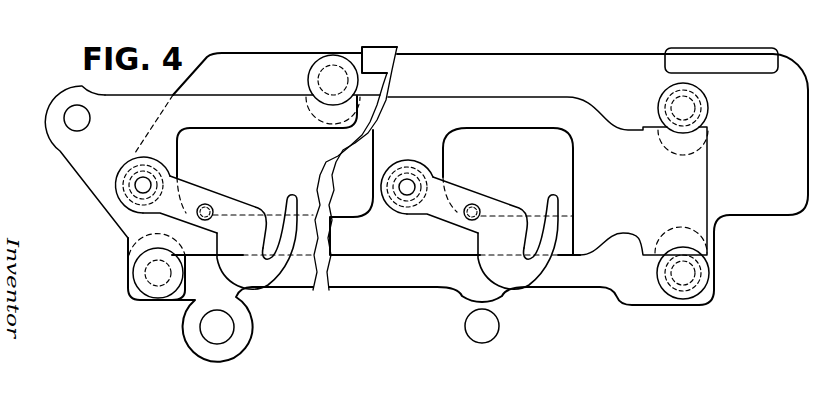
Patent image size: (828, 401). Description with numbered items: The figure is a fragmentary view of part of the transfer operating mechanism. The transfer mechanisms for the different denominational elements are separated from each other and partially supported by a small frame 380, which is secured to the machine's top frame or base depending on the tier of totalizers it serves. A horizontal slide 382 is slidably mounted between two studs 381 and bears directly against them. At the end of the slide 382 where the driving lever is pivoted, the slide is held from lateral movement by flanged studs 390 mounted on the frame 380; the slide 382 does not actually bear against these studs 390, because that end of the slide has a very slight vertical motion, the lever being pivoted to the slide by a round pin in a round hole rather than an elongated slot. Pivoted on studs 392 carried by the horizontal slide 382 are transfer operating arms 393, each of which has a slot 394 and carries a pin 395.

The small frame 380 is at (733, 212).
The stud 381 is at (708, 110).
The horizontal slide 382 is at (703, 176).
The flanged stud 390 is at (309, 78).
The stud 392 is at (139, 182).
The transfer operating arm 393 is at (257, 277).
The slot 394 is at (275, 192).
The pin 395 is at (210, 205).